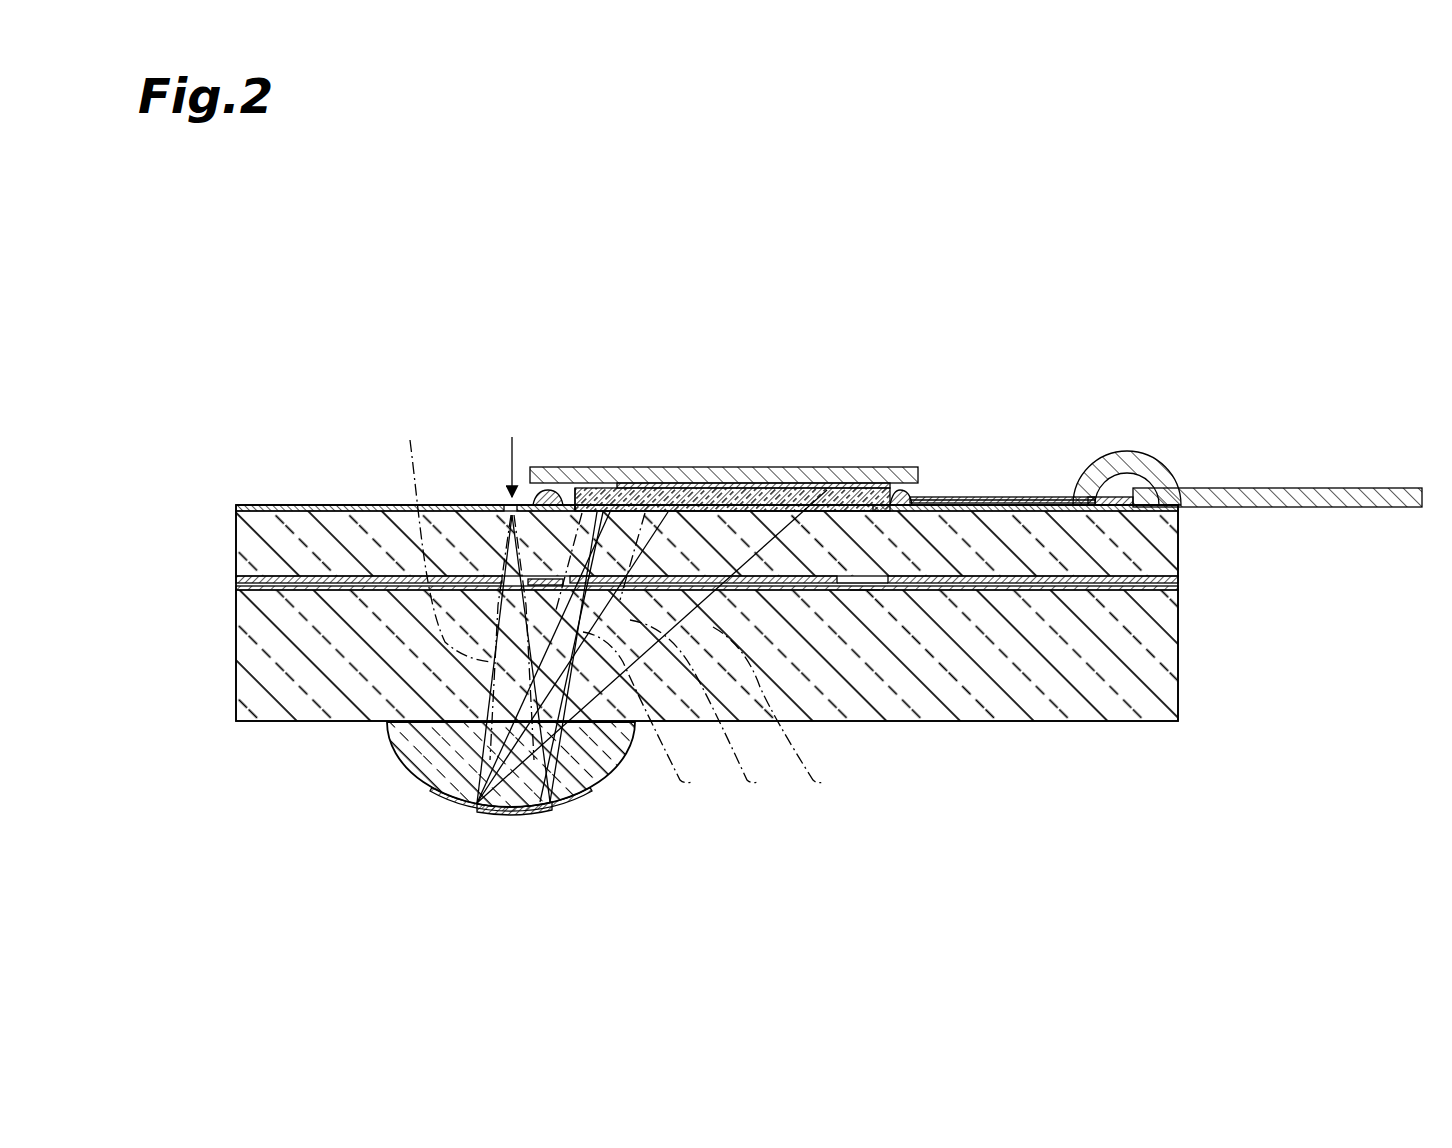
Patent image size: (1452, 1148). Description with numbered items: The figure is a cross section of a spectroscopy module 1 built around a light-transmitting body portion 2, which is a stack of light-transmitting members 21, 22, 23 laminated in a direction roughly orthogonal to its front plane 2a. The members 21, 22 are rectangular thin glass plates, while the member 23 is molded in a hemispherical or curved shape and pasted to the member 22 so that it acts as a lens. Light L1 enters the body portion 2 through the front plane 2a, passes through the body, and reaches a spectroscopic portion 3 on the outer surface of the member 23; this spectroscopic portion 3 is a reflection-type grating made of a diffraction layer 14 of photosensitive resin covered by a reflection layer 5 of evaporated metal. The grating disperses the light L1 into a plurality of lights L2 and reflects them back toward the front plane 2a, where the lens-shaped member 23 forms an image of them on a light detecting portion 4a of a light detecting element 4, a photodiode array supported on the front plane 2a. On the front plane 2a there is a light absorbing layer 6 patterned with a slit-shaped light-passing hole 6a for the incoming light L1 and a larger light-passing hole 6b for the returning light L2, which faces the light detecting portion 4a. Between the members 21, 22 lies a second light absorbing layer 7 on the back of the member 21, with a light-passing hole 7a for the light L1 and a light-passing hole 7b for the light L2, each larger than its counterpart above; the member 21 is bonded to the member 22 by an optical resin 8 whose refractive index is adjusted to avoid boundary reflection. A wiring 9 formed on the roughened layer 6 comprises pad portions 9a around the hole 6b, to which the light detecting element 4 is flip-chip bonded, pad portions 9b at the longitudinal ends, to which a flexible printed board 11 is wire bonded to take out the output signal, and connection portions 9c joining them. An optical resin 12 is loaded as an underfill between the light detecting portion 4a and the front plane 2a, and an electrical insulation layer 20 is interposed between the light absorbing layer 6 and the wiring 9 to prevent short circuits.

The spectroscopy module 1 is at (342, 292).
The body portion 2 is at (240, 492).
The front plane 2a is at (288, 506).
The light-transmitting member 21 is at (246, 540).
The light-transmitting member 22 is at (246, 683).
The light-transmitting member 23 is at (410, 760).
The spectroscopic portion 3 is at (542, 828).
The light detecting element 4 is at (830, 468).
The light detecting portion 4a is at (748, 482).
The reflection layer 5 is at (507, 819).
The light absorbing layer 6 is at (343, 506).
The light-passing hole 6a is at (545, 505).
The light-passing hole 6b is at (578, 511).
The light absorbing layer 7 is at (1180, 583).
The light-passing hole 7a is at (497, 577).
The light-passing hole 7b is at (890, 587).
The optical resin 8 is at (862, 590).
The wiring 9 is at (1044, 406).
The pad portions 9a is at (540, 497).
The pad portions 9b is at (1097, 490).
The connection portions 9c is at (992, 497).
The flexible printed board 11 is at (1310, 488).
The optical resin 12 is at (672, 484).
The diffraction layer 14 is at (452, 805).
The electrical insulation layer 20 is at (992, 497).
The light L1 is at (459, 583).
The light L2 is at (704, 655).